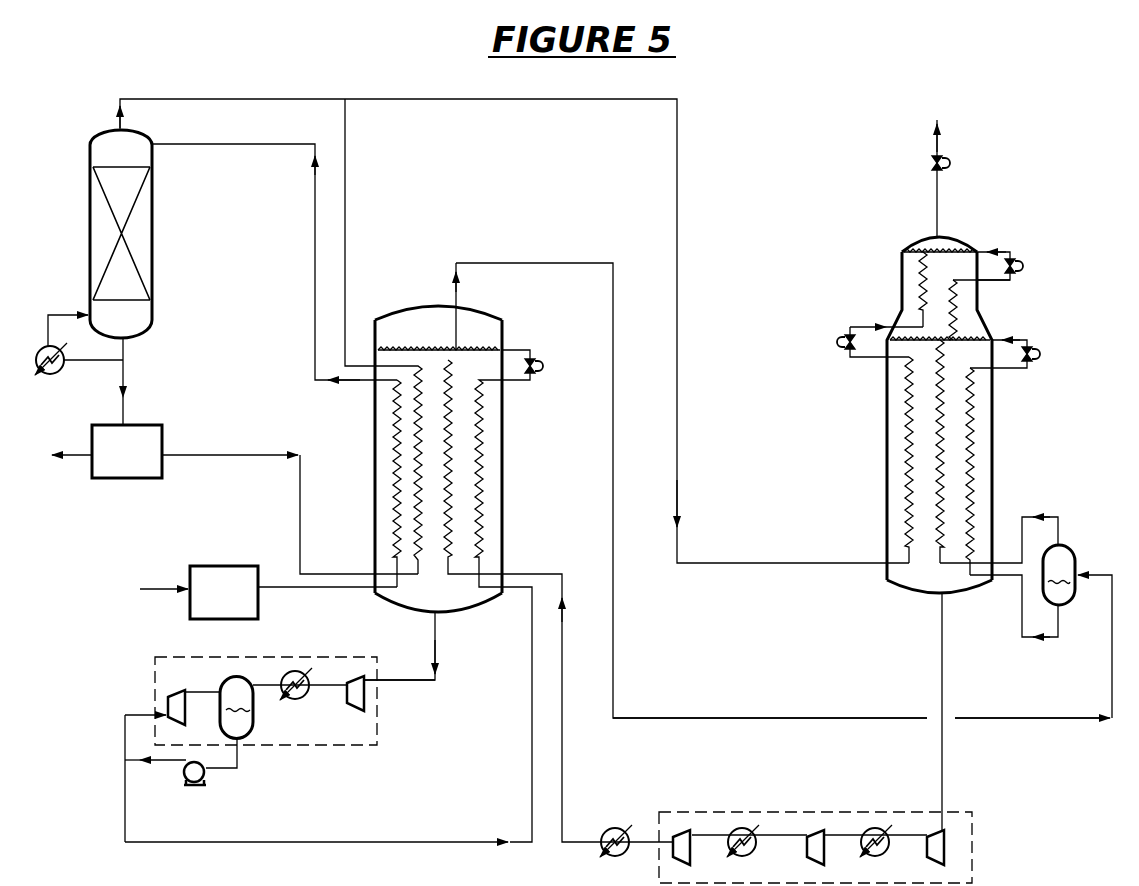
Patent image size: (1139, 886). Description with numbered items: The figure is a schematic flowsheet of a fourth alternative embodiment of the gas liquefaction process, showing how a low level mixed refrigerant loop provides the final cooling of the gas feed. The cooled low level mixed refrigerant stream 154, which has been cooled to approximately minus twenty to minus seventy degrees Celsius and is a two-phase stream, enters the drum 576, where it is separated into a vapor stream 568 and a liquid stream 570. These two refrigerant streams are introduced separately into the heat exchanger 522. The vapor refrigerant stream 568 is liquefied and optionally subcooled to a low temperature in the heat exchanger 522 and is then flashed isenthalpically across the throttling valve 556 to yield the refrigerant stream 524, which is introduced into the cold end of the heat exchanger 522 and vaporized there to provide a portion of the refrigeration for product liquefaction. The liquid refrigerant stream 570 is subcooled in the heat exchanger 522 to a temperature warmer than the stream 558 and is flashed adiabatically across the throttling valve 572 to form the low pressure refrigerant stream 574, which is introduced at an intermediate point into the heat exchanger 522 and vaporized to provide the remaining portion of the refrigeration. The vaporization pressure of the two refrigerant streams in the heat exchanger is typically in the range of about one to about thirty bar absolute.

The cooled low level mixed refrigerant stream 154 is at (1003, 716).
The heat exchanger 522 is at (888, 426).
The refrigerant stream 524 is at (985, 252).
The throttling valve 556 is at (1020, 268).
The stream 558 is at (994, 282).
The vapor stream 568 is at (1047, 517).
The liquid stream 570 is at (1049, 638).
The throttling valve 572 is at (1035, 354).
The low pressure refrigerant stream 574 is at (1032, 340).
The drum 576 is at (1078, 559).